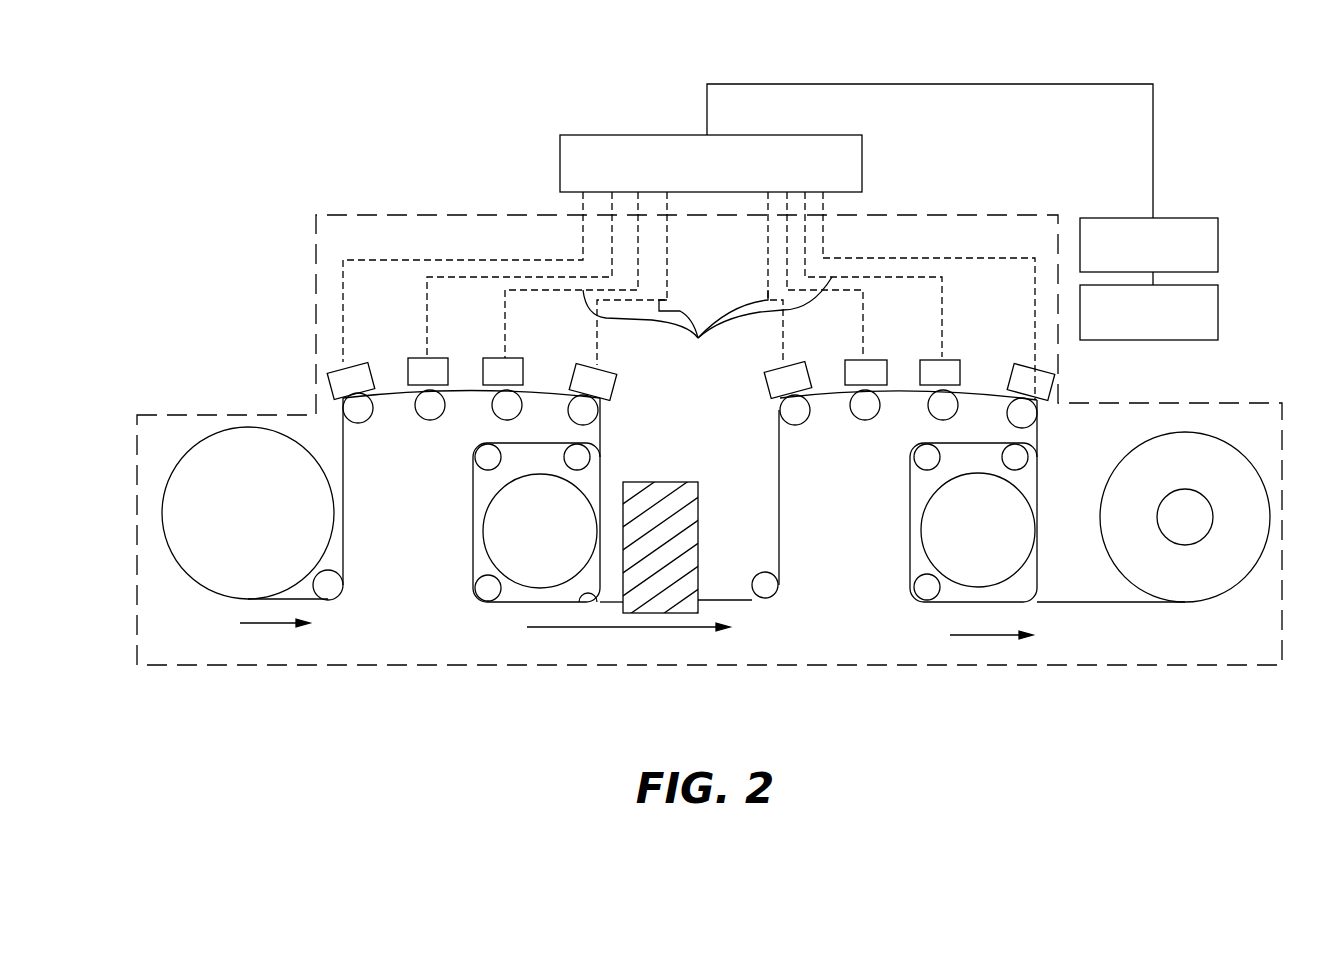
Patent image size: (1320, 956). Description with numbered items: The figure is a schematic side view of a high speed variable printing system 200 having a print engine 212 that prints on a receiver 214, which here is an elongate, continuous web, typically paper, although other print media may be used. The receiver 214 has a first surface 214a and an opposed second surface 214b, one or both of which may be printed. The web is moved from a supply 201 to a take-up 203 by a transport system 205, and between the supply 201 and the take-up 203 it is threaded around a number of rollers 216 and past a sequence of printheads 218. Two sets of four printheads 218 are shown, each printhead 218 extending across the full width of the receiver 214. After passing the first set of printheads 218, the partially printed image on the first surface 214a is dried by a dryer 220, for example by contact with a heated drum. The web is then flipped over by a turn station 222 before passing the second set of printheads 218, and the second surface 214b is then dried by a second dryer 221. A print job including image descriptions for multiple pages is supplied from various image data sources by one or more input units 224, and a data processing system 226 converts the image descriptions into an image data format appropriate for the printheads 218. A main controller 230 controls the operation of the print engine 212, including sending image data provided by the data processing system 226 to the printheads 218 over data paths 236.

The high speed variable printing system 200 is at (250, 119).
The supply 201 is at (190, 575).
The take-up 203 is at (1212, 601).
The transport system 205 is at (1158, 537).
The print engine 212 is at (1010, 665).
The receiver 214 is at (466, 492).
The first surface 214a is at (590, 603).
The second surface 214b is at (506, 603).
The rollers 216 is at (372, 418).
The printheads 218 is at (417, 366).
The dryer 220 is at (582, 484).
The second dryer 221 is at (1018, 485).
The turn station 222 is at (683, 482).
The input units 224 is at (1218, 310).
The data processing system 226 is at (1218, 238).
The main controller 230 is at (560, 158).
The data paths 236 is at (707, 321).